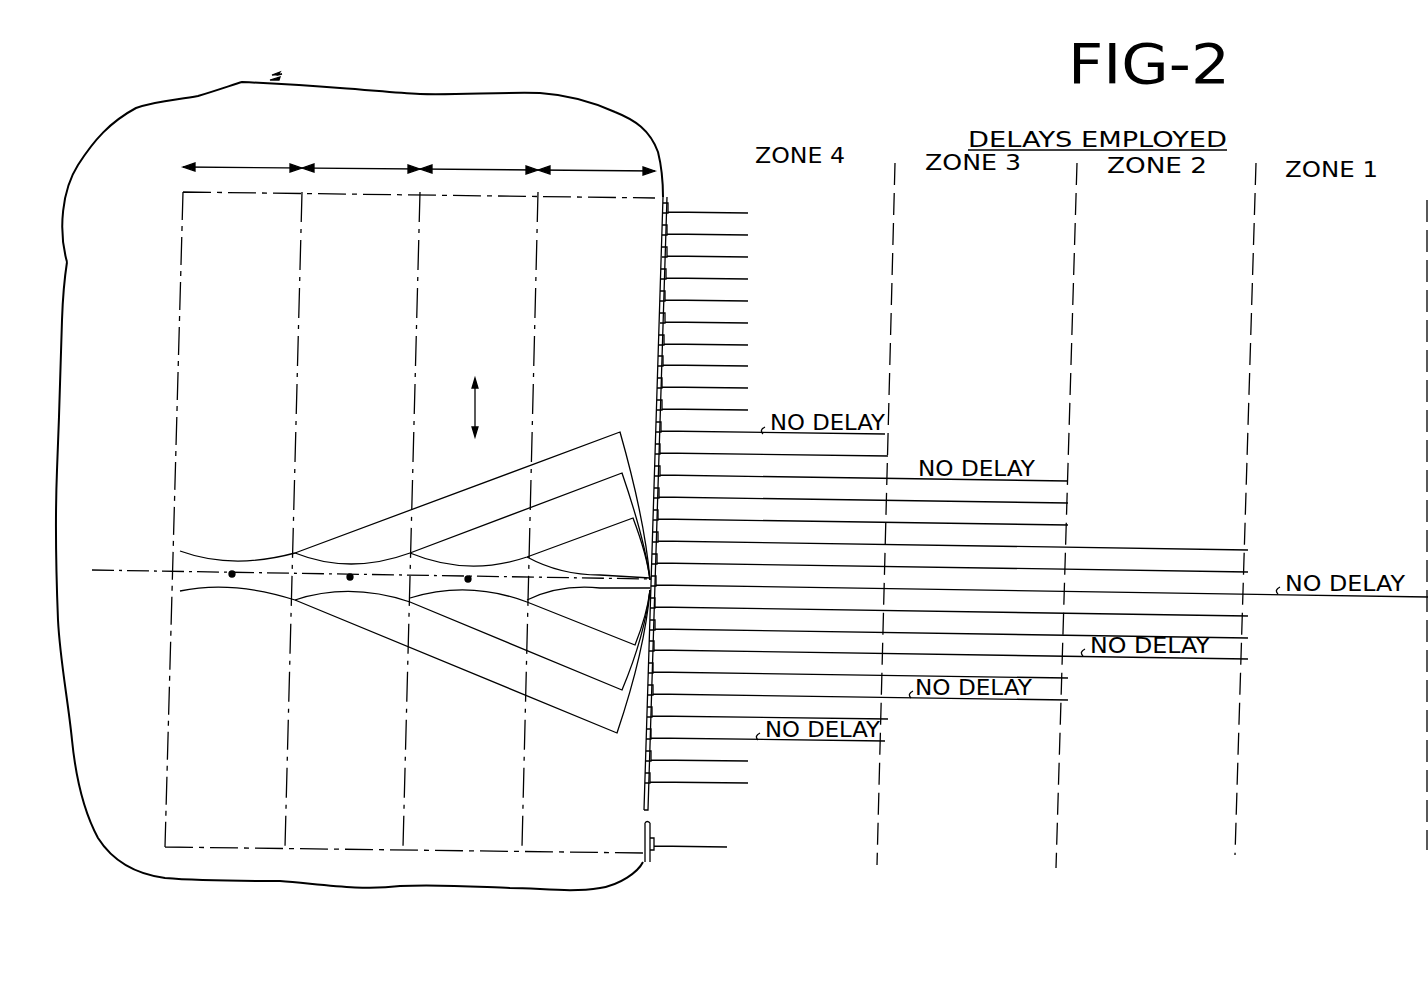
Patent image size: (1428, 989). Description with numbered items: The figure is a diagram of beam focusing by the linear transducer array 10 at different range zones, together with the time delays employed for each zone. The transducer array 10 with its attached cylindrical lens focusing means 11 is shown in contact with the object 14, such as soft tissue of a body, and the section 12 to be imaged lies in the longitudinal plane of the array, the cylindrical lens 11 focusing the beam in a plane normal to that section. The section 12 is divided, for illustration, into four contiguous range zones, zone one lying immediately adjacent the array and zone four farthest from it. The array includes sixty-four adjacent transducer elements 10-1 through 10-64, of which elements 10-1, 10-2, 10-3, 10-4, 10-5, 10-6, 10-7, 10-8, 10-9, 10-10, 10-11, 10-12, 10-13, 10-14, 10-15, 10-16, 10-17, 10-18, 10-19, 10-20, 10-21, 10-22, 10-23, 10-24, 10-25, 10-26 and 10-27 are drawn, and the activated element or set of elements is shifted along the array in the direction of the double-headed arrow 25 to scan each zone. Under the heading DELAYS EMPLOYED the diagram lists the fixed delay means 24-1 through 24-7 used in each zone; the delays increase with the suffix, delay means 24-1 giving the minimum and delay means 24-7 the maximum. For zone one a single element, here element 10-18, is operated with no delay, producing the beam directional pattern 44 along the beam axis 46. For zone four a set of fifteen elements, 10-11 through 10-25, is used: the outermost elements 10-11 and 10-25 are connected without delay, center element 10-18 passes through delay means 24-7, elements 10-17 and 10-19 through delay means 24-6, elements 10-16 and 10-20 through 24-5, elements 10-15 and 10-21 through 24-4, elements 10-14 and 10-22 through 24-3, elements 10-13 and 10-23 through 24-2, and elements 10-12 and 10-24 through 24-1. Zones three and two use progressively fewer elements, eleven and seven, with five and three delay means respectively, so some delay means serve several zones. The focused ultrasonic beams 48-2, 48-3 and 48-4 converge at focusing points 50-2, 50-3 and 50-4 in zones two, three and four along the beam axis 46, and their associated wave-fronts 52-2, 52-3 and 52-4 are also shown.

The linear transducer array 10 is at (673, 190).
The cylindrical lens focusing means 11 is at (652, 863).
The section 12 is at (183, 237).
The object 14 is at (242, 82).
The double-headed arrow 25 is at (477, 406).
The beam directional pattern 44 is at (622, 590).
The beam axis 46 is at (123, 570).
The focused ultrasonic beam 48-2 is at (505, 597).
The focused ultrasonic beam 48-3 is at (392, 598).
The focused ultrasonic beam 48-4 is at (258, 590).
The focusing point 50-2 is at (498, 553).
The focusing point 50-3 is at (382, 548).
The focusing point 50-4 is at (243, 537).
The wave-front 52-2 is at (643, 533).
The wave-front 52-3 is at (632, 672).
The wave-front 52-4 is at (627, 715).
The transducer element 10-1 is at (669, 207).
The transducer element 10-2 is at (668, 229).
The transducer element 10-3 is at (668, 251).
The transducer element 10-4 is at (667, 273).
The transducer element 10-5 is at (666, 295).
The transducer element 10-6 is at (666, 317).
The transducer element 10-7 is at (665, 339).
The transducer element 10-8 is at (664, 360).
The transducer element 10-9 is at (663, 382).
The transducer element 10-10 is at (663, 404).
The transducer element 10-11 is at (662, 426).
The transducer element 10-12 is at (661, 448).
The transducer element 10-13 is at (661, 470).
The transducer element 10-14 is at (660, 492).
The transducer element 10-15 is at (659, 514).
The transducer element 10-16 is at (659, 536).
The transducer element 10-17 is at (658, 558).
The transducer element 10-18 is at (657, 580).
The transducer element 10-19 is at (656, 602).
The transducer element 10-20 is at (656, 624).
The transducer element 10-21 is at (655, 645).
The transducer element 10-22 is at (654, 667).
The transducer element 10-23 is at (654, 689).
The transducer element 10-24 is at (653, 711).
The transducer element 10-25 is at (652, 733).
The transducer element 10-26 is at (652, 755).
The transducer element 10-27 is at (651, 777).
The transducer element 10-64 is at (656, 842).
The fixed signal delay element 24-1 is at (952, 667).
The fixed signal delay element 24-2 is at (1120, 627).
The fixed signal delay element 24-3 is at (952, 645).
The fixed signal delay element 24-4 is at (1120, 605).
The fixed signal delay element 24-5 is at (1120, 583).
The fixed signal delay element 24-6 is at (952, 580).
The fixed signal delay element 24-7 is at (779, 571).